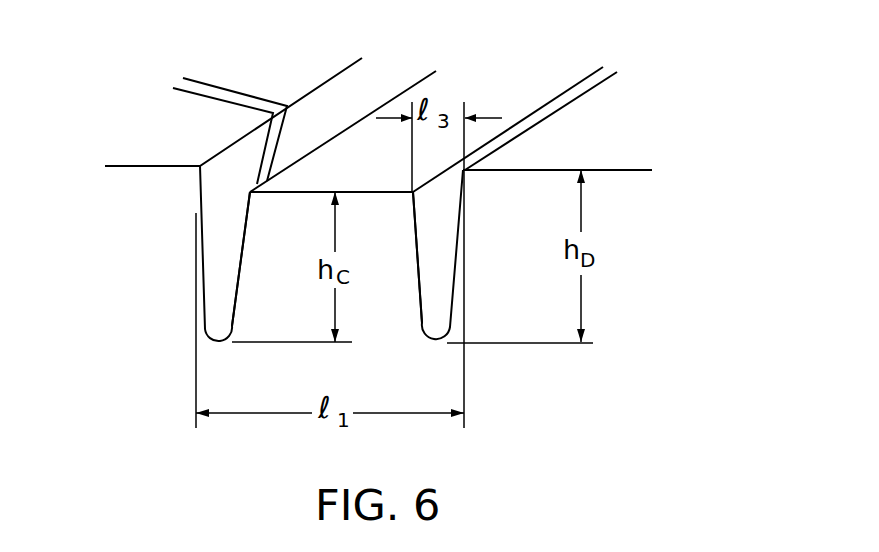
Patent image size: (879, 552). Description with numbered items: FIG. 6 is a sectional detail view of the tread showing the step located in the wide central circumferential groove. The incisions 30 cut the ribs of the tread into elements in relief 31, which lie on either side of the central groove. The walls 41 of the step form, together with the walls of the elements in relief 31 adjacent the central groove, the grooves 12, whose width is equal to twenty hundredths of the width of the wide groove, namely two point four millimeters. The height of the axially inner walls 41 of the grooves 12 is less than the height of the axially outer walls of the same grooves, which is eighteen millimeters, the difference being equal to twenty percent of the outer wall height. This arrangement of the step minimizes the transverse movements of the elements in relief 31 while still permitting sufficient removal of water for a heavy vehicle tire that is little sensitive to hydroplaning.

The groove 12 is at (222, 263).
The incision 30 is at (242, 98).
The element in relief 31 is at (595, 130).
The wall 41 is at (244, 250).